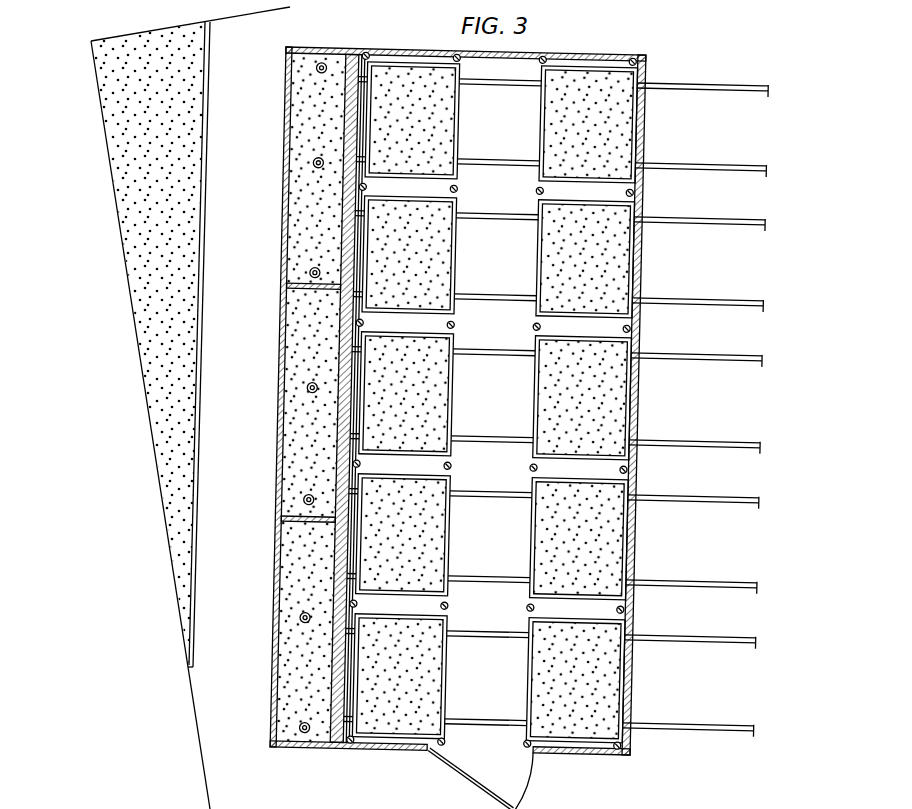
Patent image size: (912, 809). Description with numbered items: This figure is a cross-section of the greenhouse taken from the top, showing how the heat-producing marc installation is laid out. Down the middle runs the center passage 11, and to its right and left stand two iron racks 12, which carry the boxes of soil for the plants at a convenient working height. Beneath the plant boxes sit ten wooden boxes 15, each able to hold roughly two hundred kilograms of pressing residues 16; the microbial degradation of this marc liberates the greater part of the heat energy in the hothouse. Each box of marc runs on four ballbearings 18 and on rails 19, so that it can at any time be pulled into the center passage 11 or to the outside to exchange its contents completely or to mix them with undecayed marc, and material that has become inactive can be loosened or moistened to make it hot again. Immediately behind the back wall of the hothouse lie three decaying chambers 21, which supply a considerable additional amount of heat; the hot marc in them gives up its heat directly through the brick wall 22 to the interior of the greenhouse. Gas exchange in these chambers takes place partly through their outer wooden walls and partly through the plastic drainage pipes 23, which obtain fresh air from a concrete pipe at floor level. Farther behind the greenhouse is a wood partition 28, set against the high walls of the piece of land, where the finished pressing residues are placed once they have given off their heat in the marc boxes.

The center passage 11 is at (457, 428).
The iron racks 12 is at (492, 400).
The wooden boxes 15 is at (443, 401).
The pressing residues 16 is at (494, 402).
The ballbearings 18 is at (617, 6).
The rails 19 is at (623, 408).
The decaying chambers 21 is at (311, 397).
The brick wall 22 is at (294, 397).
The plastic drainage pipes 23 is at (275, 397).
The wood partition 28 is at (165, 356).